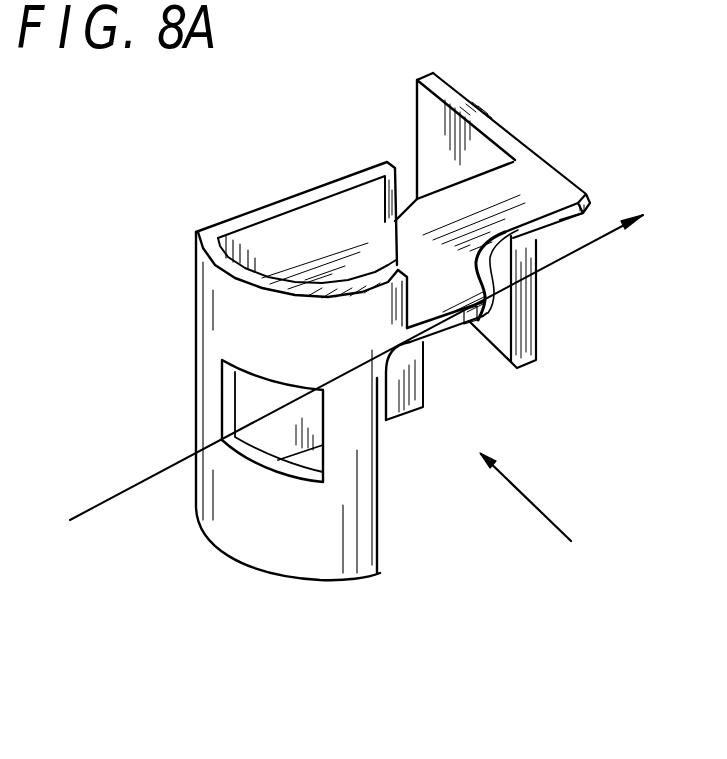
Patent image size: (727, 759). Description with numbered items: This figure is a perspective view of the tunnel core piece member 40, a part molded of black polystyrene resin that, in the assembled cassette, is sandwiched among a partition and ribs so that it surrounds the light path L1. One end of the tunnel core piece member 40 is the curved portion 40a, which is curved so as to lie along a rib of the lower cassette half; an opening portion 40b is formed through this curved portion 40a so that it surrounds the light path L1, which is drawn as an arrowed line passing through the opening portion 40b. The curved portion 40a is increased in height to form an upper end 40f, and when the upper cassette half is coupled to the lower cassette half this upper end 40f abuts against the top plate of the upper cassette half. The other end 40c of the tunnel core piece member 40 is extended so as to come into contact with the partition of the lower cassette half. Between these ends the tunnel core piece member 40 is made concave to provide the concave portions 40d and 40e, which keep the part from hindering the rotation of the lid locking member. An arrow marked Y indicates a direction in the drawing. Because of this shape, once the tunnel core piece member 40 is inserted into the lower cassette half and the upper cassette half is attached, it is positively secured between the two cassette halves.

The tunnel core piece member 40 is at (387, 337).
The curved portion 40a is at (360, 578).
The opening portion 40b is at (278, 435).
The other end 40c is at (453, 98).
The concave portion 40d is at (517, 217).
The concave portion 40e is at (399, 366).
The upper end 40f is at (258, 213).
The light path L1 is at (117, 495).
The direction Y is at (536, 508).